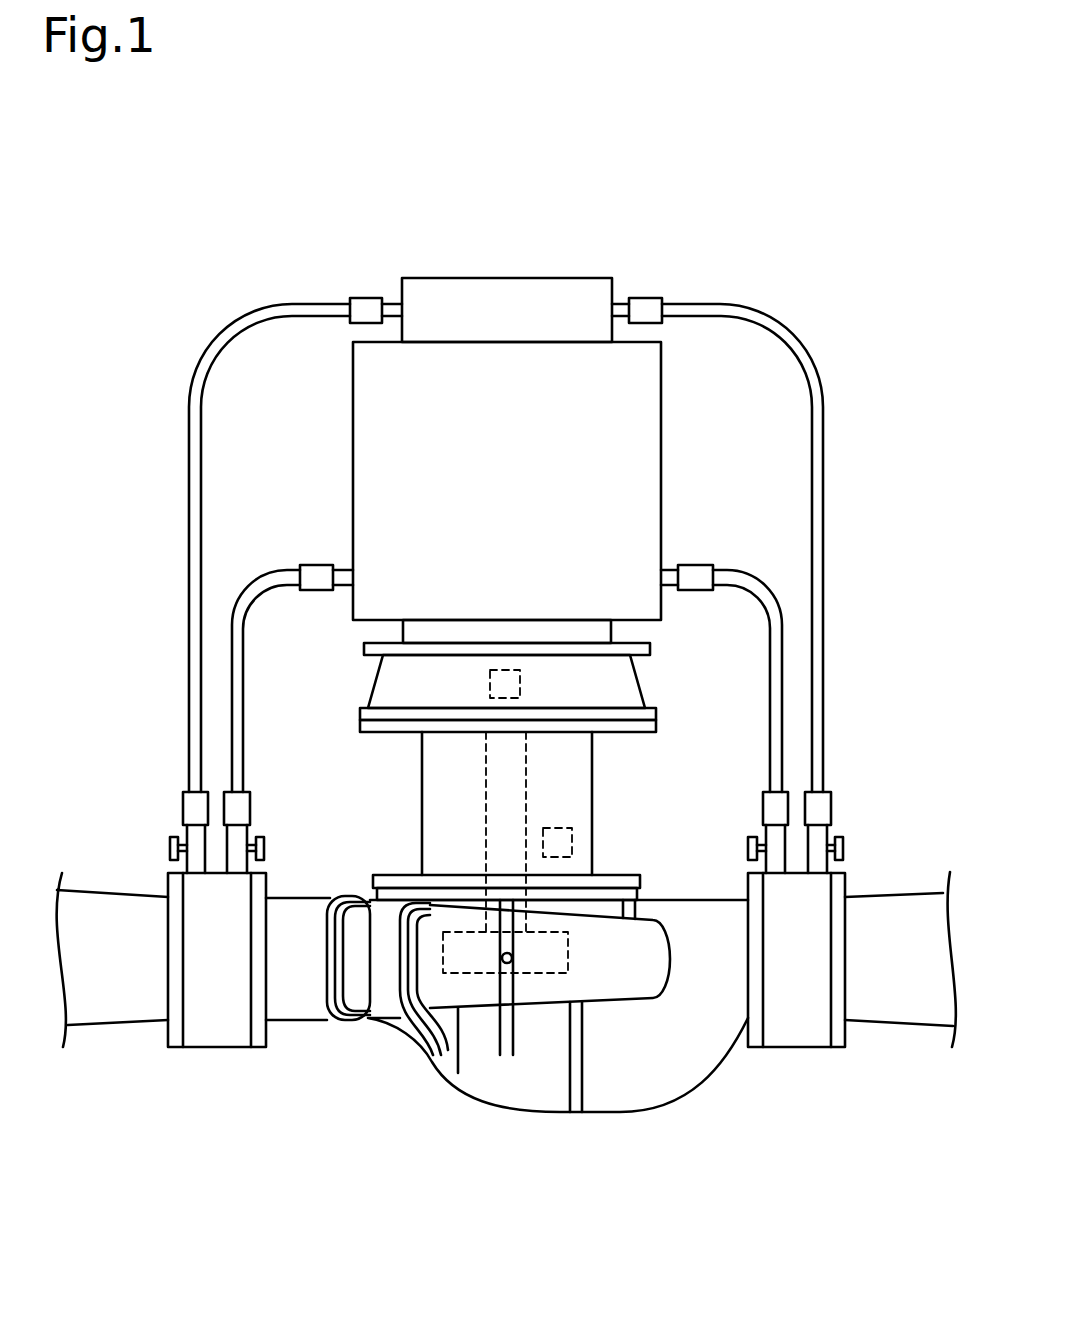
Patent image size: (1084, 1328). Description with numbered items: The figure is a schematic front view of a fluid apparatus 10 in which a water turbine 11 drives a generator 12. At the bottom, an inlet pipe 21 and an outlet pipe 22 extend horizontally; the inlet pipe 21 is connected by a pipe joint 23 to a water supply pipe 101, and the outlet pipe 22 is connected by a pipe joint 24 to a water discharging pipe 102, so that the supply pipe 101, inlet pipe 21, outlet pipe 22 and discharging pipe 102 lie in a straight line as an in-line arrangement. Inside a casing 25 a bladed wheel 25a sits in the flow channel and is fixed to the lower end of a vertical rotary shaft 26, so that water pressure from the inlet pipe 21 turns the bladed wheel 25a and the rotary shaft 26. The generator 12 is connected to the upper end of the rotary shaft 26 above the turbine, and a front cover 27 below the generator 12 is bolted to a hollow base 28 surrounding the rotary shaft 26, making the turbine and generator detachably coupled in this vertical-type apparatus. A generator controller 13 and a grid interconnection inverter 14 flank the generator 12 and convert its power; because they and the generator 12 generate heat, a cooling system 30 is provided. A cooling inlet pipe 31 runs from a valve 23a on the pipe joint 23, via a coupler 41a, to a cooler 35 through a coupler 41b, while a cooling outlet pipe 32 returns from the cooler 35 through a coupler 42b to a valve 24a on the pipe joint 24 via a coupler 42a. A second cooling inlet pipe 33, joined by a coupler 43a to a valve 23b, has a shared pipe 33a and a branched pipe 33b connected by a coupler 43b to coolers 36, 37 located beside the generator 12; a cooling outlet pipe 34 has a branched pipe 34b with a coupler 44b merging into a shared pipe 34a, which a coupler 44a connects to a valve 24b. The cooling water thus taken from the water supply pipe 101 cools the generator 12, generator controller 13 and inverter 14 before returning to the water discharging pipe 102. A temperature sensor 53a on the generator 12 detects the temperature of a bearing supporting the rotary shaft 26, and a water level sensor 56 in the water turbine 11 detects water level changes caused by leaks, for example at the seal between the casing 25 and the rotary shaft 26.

The fluid apparatus 10 is at (846, 201).
The water turbine 11 is at (431, 1120).
The generator 12 is at (642, 450).
The generator controller 13 is at (642, 411).
The grid interconnection inverter 14 is at (642, 373).
The inlet pipe 21 is at (305, 1007).
The outlet pipe 22 is at (712, 1050).
The pipe joint 23 is at (222, 1037).
The valve 23a is at (170, 848).
The valve 23b is at (264, 848).
The pipe joint 24 is at (795, 1035).
The valve 24a is at (843, 848).
The valve 24b is at (748, 848).
The casing 25 is at (502, 1095).
The bladed wheel 25a is at (568, 953).
The rotary shaft 26 is at (526, 773).
The front cover 27 is at (637, 673).
The hollow base 28 is at (422, 786).
The cooling system 30 is at (848, 345).
The cooling inlet pipe 31 is at (189, 676).
The cooling outlet pipe 32 is at (823, 620).
The cooling inlet pipe 33 is at (313, 632).
The shared pipe 33a is at (243, 713).
The branched pipe 33b is at (270, 588).
The cooling outlet pipe 34 is at (700, 632).
The shared pipe 34a is at (770, 723).
The branched pipe 34b is at (743, 592).
The cooler 35 is at (490, 278).
The cooler 36 is at (370, 357).
The cooler 37 is at (370, 392).
The coupler 41a is at (183, 805).
The coupler 41b is at (365, 298).
The coupler 42a is at (831, 805).
The coupler 42b is at (645, 298).
The coupler 43a is at (250, 805).
The coupler 43b is at (317, 560).
The coupler 44a is at (763, 805).
The coupler 44b is at (697, 562).
The temperature sensor 53a is at (520, 684).
The water level sensor 56 is at (572, 843).
The water supply pipe 101 is at (117, 1012).
The water discharging pipe 102 is at (902, 1013).